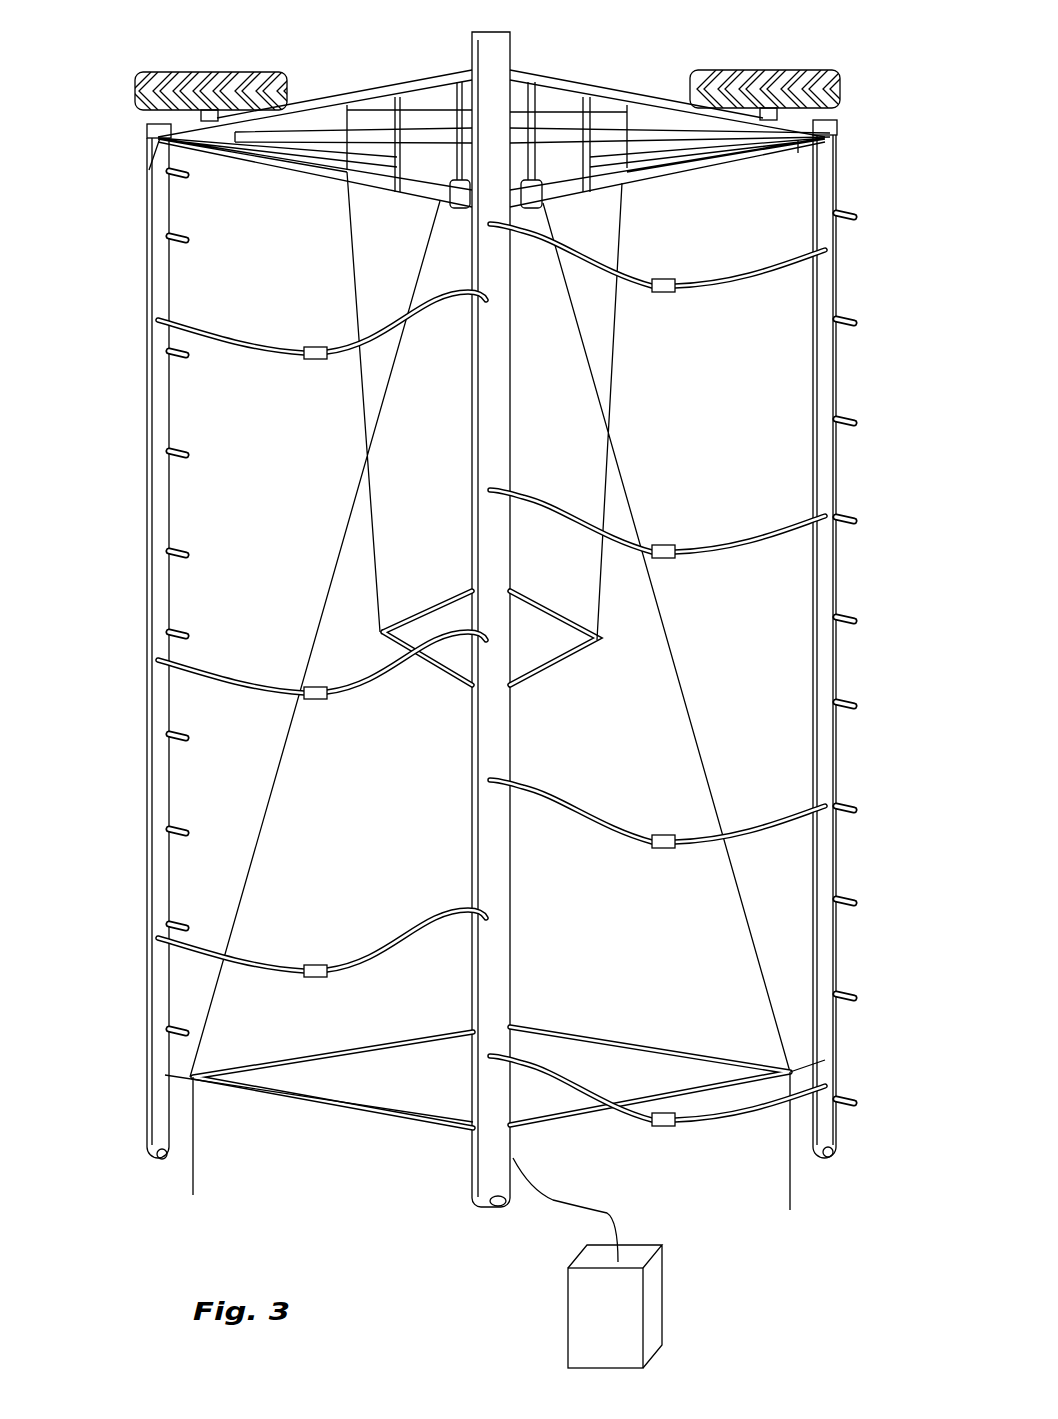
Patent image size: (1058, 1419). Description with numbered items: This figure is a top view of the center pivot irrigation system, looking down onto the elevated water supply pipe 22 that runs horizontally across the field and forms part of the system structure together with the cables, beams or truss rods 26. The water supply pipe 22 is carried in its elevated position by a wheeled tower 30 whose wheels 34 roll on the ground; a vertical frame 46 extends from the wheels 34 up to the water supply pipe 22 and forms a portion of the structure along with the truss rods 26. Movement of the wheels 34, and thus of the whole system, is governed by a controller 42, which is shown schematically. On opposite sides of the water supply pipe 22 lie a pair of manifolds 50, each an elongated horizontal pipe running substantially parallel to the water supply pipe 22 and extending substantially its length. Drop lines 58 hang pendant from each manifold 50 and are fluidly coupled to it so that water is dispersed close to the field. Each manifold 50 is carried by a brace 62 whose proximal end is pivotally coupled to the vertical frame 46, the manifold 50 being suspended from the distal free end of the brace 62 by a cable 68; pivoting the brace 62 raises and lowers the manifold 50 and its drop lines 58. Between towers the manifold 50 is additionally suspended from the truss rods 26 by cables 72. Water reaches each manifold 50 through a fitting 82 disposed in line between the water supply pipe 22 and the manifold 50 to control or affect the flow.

The water supply pipe 22 is at (471, 52).
The truss rods 26 is at (347, 1107).
The wheeled tower 30 is at (573, 85).
The wheels 34 is at (215, 73).
The controller 42 is at (628, 1310).
The vertical frame 46 is at (413, 90).
The manifold 50 is at (157, 392).
The drop lines 58 is at (178, 554).
The brace 62 is at (800, 143).
The cable 68 is at (148, 165).
The cable 72 is at (178, 1078).
The fitting 82 is at (320, 708).